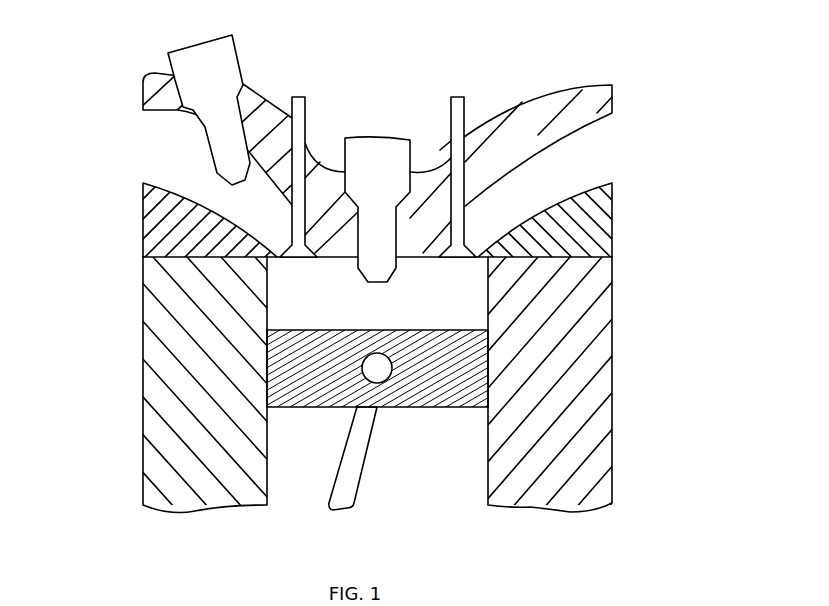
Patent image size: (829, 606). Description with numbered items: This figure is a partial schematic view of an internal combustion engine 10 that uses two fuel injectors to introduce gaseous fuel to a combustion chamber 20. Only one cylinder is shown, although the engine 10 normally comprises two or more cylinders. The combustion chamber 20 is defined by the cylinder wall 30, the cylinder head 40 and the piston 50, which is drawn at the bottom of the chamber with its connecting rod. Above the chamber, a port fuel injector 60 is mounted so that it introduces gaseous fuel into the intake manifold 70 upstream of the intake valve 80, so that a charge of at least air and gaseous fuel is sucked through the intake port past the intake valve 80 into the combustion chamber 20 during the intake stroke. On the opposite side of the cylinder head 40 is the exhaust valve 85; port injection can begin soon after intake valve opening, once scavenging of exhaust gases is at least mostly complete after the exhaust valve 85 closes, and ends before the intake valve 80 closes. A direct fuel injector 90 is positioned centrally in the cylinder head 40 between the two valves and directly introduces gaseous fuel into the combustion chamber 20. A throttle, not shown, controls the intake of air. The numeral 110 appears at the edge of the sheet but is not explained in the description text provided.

The engine 10 is at (710, 85).
The combustion chamber 20 is at (377, 288).
The cylinder wall 30 is at (183, 345).
The cylinder head 40 is at (177, 228).
The piston 50 is at (437, 390).
The port fuel injector 60 is at (240, 52).
The intake manifold 70 is at (170, 160).
The intake valve 80 is at (306, 118).
The exhaust valve 85 is at (465, 108).
The direct fuel injector 90 is at (378, 138).
The controller 110 is at (709, 602).